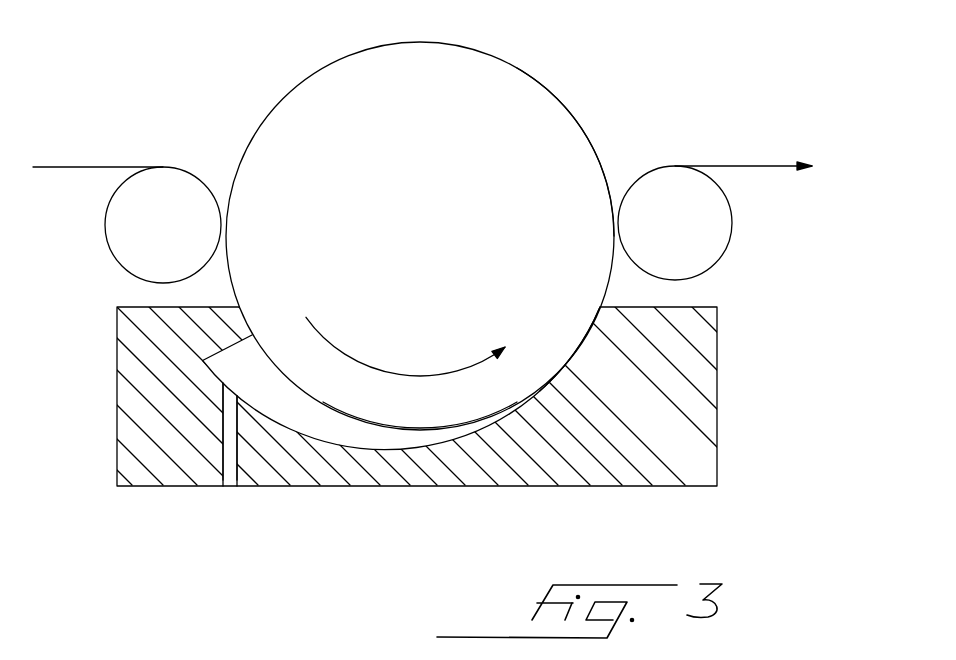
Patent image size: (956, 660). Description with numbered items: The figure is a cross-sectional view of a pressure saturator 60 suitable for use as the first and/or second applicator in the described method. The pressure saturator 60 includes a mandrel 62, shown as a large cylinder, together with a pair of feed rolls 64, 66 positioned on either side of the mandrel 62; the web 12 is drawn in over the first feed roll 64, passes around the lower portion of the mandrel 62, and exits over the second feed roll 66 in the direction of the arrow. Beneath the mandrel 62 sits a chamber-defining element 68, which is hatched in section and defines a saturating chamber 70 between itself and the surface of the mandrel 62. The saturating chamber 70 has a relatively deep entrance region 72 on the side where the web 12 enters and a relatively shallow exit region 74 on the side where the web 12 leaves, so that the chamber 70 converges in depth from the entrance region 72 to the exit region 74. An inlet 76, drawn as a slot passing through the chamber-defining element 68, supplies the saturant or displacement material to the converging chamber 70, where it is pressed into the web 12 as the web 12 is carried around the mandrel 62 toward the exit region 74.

The web 12 is at (745, 164).
The pressure saturator 60 is at (278, 75).
The mandrel 62 is at (550, 120).
The feed roll 64 is at (120, 222).
The feed roll 66 is at (718, 240).
The chamber-defining element 68 is at (707, 409).
The saturating chamber 70 is at (353, 428).
The entrance region 72 is at (232, 372).
The exit region 74 is at (588, 329).
The inlet 76 is at (229, 477).